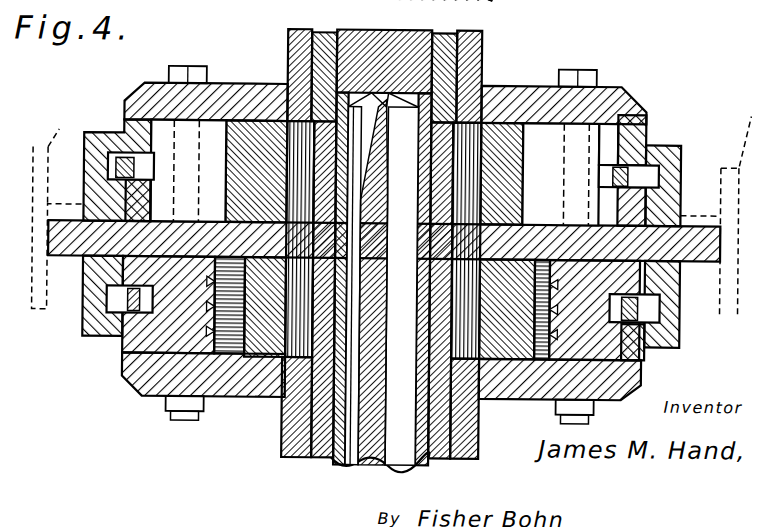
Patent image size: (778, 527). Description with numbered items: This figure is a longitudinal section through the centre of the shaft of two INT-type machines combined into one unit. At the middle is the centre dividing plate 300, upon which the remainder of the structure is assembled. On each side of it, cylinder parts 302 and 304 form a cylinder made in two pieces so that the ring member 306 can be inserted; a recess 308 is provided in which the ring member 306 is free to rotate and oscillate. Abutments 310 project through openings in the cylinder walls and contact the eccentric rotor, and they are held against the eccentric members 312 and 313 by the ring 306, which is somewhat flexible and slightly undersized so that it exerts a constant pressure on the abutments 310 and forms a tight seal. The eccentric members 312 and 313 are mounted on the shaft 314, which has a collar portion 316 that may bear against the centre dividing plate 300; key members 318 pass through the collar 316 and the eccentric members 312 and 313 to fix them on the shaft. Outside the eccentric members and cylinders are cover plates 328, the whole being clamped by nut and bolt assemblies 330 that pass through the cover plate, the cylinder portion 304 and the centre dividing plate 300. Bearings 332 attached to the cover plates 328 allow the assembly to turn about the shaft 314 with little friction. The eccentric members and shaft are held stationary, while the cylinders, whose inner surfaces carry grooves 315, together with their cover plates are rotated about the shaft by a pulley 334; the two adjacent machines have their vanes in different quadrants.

The centre dividing plate 300 is at (707, 242).
The cylinder part 302 is at (650, 143).
The cylinder part 304 is at (630, 110).
The ring member 306 is at (633, 168).
The recess 308 is at (612, 175).
The abutment 310 is at (625, 93).
The eccentric member 312 is at (285, 392).
The eccentric member 313 is at (487, 125).
The shaft 314 is at (337, 462).
The grooves 315 is at (212, 284).
The collar portion 316 is at (596, 213).
The key member 318 is at (300, 95).
The cover plate 328 is at (132, 386).
The nut and bolt assembly 330 is at (550, 140).
The bearing 332 is at (315, 58).
The pulley 334 is at (58, 122).